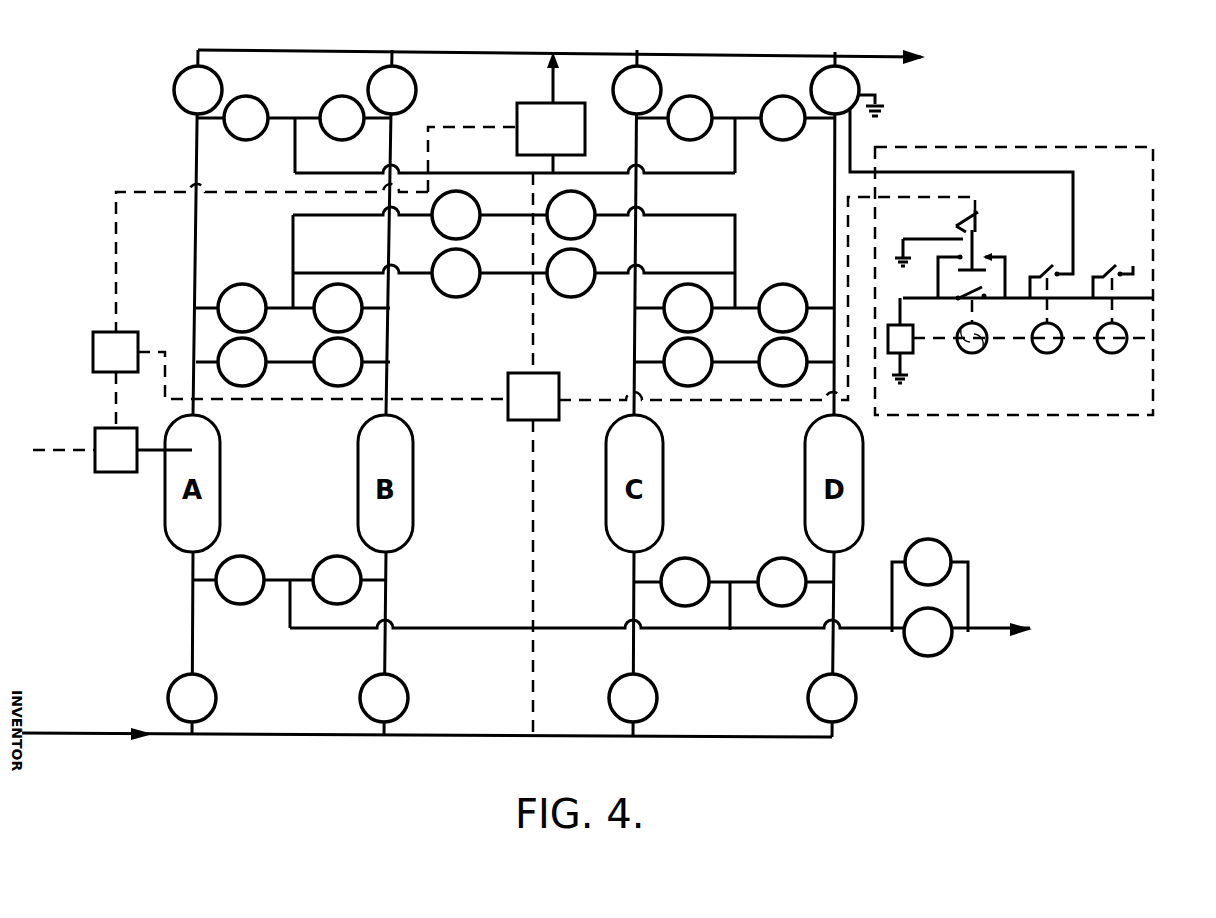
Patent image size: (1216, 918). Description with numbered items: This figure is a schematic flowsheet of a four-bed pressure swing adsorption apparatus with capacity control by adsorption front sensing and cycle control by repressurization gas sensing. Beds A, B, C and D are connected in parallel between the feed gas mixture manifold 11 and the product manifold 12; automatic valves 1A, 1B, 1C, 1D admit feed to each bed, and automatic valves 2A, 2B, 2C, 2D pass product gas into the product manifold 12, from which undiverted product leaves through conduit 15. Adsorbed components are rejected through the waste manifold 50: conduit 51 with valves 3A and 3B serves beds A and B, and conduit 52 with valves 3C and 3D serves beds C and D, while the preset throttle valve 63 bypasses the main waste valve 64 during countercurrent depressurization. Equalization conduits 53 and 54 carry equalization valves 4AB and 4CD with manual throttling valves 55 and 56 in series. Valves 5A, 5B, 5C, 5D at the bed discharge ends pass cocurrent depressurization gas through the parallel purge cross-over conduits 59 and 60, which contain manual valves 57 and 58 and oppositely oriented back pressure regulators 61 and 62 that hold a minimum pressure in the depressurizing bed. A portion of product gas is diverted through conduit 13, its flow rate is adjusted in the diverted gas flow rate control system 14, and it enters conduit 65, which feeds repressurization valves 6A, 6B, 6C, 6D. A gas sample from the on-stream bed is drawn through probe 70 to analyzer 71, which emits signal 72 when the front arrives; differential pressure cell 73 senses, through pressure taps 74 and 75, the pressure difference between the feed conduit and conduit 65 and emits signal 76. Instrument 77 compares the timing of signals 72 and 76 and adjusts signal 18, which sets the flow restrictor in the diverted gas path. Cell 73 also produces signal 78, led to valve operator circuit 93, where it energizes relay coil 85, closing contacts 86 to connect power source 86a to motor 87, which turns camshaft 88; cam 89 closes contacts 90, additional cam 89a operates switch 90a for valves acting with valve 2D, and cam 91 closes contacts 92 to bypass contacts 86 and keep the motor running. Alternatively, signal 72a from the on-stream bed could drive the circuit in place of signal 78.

The automatic valve 1A is at (217, 697).
The automatic valve 1B is at (409, 697).
The automatic valve 1C is at (658, 697).
The automatic valve 1D is at (857, 697).
The automatic valve 2A is at (222, 84).
The automatic valve 2B is at (416, 84).
The automatic valve 2C is at (661, 84).
The automatic valve 2D is at (859, 82).
The automatic valve 3A is at (250, 604).
The automatic valve 3B is at (328, 557).
The automatic valve 3C is at (790, 618).
The automatic valve 3D is at (783, 558).
The equalization valve 4AB is at (243, 386).
The equalization valve 4CD is at (783, 386).
The automatic valve 5A is at (240, 284).
The automatic valve 5B is at (336, 284).
The automatic valve 5C is at (685, 284).
The automatic valve 5D is at (778, 286).
The repressurization valve 6A is at (243, 140).
The repressurization valve 6B is at (330, 140).
The repressurization valve 6C is at (688, 140).
The repressurization valve 6D is at (772, 140).
The feed gas mixture manifold 11 is at (100, 733).
The product manifold 12 is at (490, 50).
The diverted product gas conduit 13 is at (549, 76).
The diverted gas flow rate control system 14 is at (566, 104).
The conduit 15 is at (882, 52).
The signal 18 is at (115, 268).
The waste manifold 50 is at (466, 628).
The conduit 51 is at (274, 578).
The conduit 52 is at (720, 578).
The equalization conduit 53 is at (293, 362).
The equalization conduit 54 is at (734, 362).
The manual preset throttling valve 55 is at (335, 386).
The manual preset throttling valve 56 is at (688, 386).
The manual valve 57 is at (593, 203).
The manual valve 58 is at (447, 294).
The purge cross-over conduit 59 is at (510, 220).
The purge cross-over conduit 60 is at (514, 300).
The back pressure regulator 61 is at (478, 203).
The back pressure regulator 62 is at (580, 294).
The preset throttle valve 63 is at (946, 547).
The main waste valve 64 is at (947, 650).
The repressurization conduit 65 is at (486, 173).
The probe 70 is at (155, 453).
The analyzer 71 is at (112, 473).
The output signal 72 is at (115, 411).
The signal 72a is at (59, 456).
The differential pressure cell 73 is at (561, 395).
The pressure tap 74 is at (535, 604).
The pressure tap 75 is at (534, 312).
The signal 76 is at (311, 398).
The instrument 77 is at (93, 350).
The signal 78 is at (848, 244).
The relay coil 85 is at (975, 230).
The relay contacts 86 is at (978, 253).
The power source 86a is at (1140, 300).
The motor 87 is at (907, 358).
The camshaft 88 is at (1000, 342).
The cam 89 is at (1047, 354).
The additional cam 89a is at (1112, 354).
The contacts 90 is at (1043, 261).
The switch 90a is at (1112, 261).
The cam 91 is at (972, 354).
The contacts 92 is at (984, 301).
The valve operator circuit 93 is at (1056, 147).